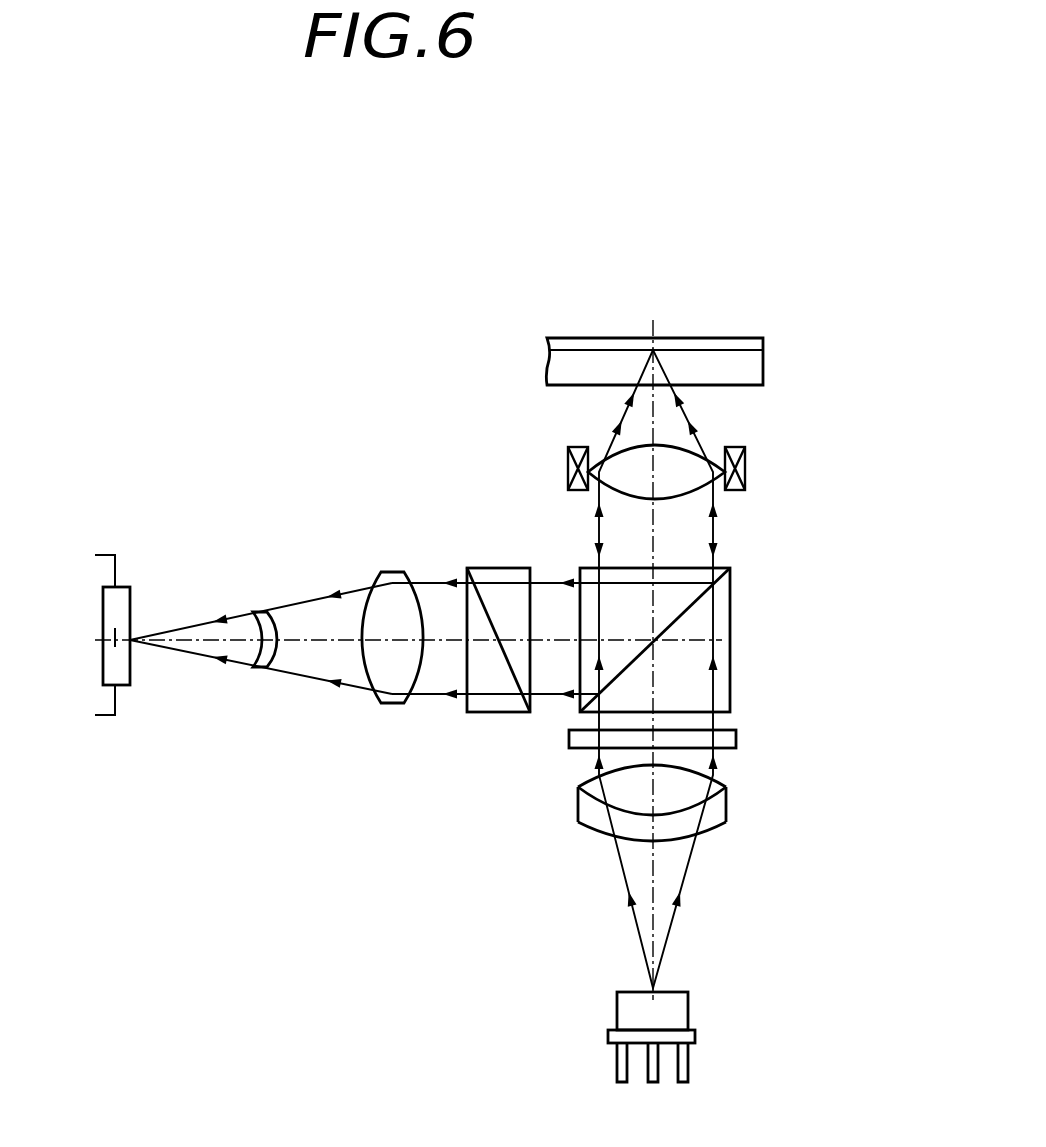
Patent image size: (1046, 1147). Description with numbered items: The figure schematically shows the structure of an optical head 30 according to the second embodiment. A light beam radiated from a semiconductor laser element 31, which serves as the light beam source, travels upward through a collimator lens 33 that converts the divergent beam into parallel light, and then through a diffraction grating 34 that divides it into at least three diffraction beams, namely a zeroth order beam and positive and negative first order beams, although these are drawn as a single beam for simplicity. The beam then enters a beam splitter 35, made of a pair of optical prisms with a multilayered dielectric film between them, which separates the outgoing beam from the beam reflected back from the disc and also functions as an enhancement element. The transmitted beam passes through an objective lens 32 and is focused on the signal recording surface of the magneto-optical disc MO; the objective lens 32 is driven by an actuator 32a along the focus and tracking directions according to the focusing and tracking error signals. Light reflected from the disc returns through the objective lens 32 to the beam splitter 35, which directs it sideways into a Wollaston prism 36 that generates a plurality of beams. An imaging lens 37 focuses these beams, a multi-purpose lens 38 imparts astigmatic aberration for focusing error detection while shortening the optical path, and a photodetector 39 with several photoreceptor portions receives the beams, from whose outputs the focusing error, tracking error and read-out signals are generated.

The optical pickup / optical head 30 is at (690, 307).
The magneto-optical disc MO is at (548, 343).
The objective lens 32 is at (597, 463).
The actuator 32a is at (743, 453).
The beam splitter 35 is at (730, 597).
The diffraction grating 34 is at (737, 735).
The collimator lens 33 is at (726, 815).
The semiconductor laser element 31 is at (688, 1015).
The Wollaston prism 36 is at (477, 712).
The imaging lens 37 is at (385, 708).
The multi-purpose lens 38 is at (260, 667).
The photodetector 39 is at (106, 672).